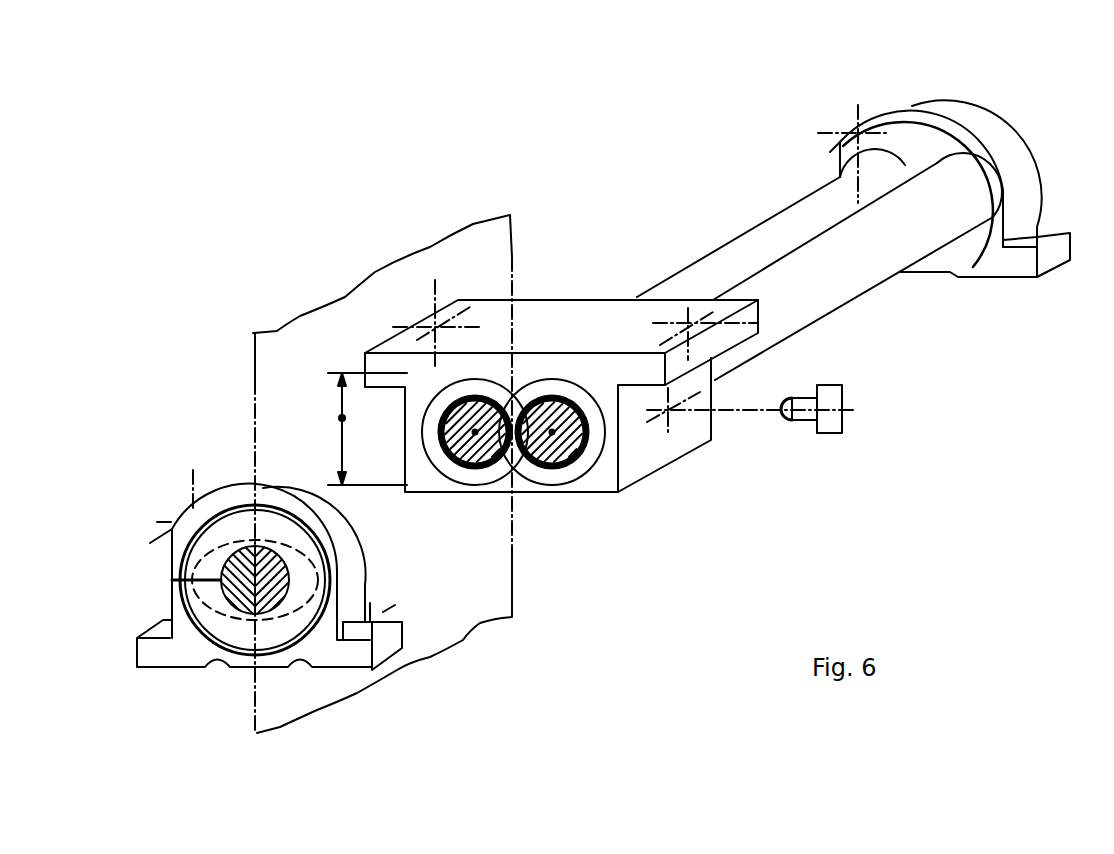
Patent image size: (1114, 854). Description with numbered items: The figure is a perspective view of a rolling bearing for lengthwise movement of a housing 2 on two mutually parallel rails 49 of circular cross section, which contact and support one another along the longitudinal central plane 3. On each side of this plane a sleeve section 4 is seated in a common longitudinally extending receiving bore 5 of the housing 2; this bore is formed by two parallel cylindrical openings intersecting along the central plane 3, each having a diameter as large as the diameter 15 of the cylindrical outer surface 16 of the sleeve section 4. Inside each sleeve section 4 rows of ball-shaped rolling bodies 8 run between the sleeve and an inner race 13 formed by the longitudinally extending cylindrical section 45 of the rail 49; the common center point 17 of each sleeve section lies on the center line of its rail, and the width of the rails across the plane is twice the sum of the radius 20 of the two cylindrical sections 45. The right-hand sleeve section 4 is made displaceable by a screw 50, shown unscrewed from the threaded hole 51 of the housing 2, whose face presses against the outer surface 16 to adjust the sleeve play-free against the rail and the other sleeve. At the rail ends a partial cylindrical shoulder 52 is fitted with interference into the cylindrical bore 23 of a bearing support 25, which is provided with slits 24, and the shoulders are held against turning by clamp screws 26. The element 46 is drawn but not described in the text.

The housing 2 is at (613, 312).
The longitudinal central plane 3 is at (268, 716).
The sleeve section 4 is at (432, 400).
The receiving bore 5 is at (536, 470).
The rolling bodies 8 is at (582, 466).
The inner race 13 is at (467, 478).
The diameter of the cylindrical outer surface 15 is at (342, 418).
The cylindrical outer surface 16 is at (601, 445).
The common center point 17 is at (562, 383).
The radius of the cylindrical sections 20 is at (493, 383).
The cylindrical bore 23 is at (250, 543).
The slits 24 is at (204, 583).
The bearing support 25 is at (385, 648).
The clamp screws 26 is at (190, 512).
The cylindrical section 45 is at (543, 378).
The bearing ring 46 is at (528, 368).
The rails 49 is at (827, 258).
The screw 50 is at (830, 420).
The threaded hole 51 is at (680, 417).
The partial cylindrical shoulder 52 is at (250, 612).